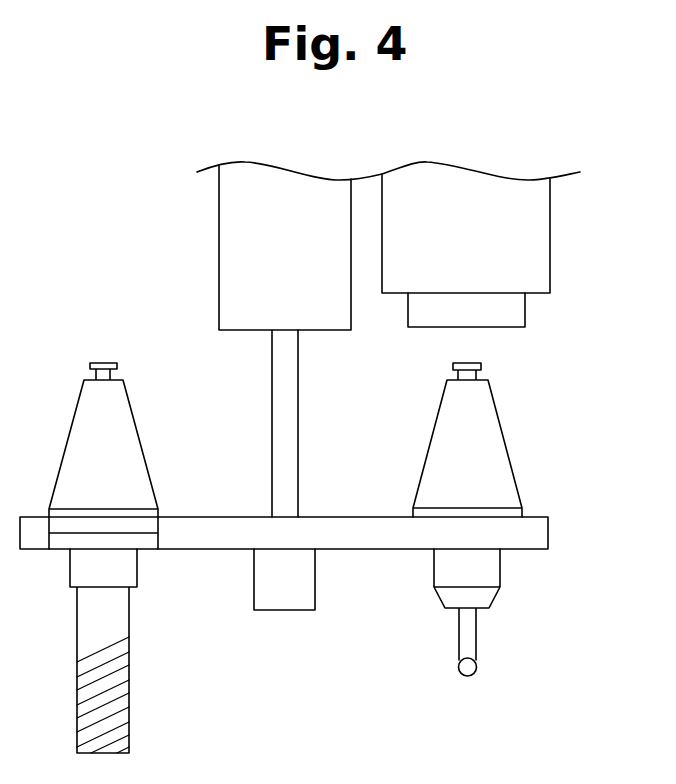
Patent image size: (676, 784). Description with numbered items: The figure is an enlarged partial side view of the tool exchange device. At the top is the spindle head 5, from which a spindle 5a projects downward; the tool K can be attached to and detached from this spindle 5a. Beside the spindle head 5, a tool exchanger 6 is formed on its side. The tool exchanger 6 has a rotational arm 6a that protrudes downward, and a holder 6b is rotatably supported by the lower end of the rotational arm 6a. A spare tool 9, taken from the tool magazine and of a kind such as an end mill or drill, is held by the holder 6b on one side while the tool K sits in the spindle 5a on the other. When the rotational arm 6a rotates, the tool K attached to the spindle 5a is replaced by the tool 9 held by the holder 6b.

The spindle head 5 is at (446, 180).
The spindle 5a is at (527, 312).
The tool exchanger 6 is at (304, 187).
The rotational arm 6a is at (272, 408).
The holder 6b is at (293, 603).
The tool 9 is at (133, 437).
The tool K is at (500, 445).